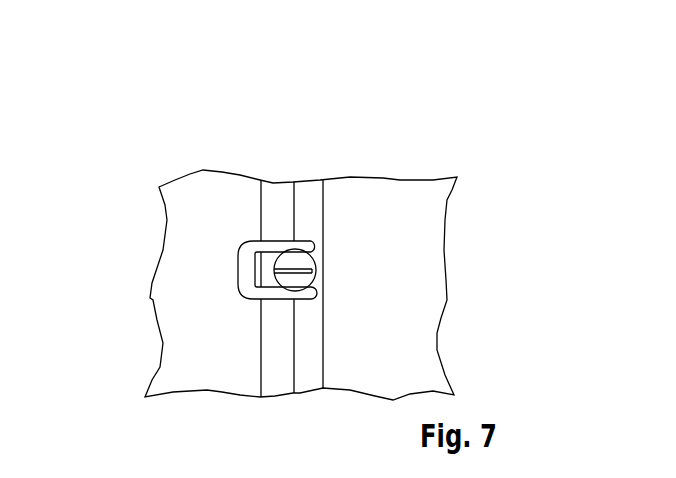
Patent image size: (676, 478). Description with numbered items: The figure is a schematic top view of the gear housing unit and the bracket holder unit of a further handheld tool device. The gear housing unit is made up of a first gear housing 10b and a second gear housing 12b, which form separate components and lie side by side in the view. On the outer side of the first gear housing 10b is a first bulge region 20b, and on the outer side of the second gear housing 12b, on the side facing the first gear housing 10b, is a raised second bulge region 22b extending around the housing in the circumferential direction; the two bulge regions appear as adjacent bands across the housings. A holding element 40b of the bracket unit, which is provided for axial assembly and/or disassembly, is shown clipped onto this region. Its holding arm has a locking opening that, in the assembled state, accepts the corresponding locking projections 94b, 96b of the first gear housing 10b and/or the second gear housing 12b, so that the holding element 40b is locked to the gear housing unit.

The first gear housing 10b is at (206, 178).
The second gear housing 12b is at (403, 190).
The first bulge region 20b is at (277, 190).
The second bulge region 22b is at (312, 188).
The holding element 40b is at (243, 282).
The locking projection 94b is at (302, 282).
The locking projection 96b is at (303, 262).